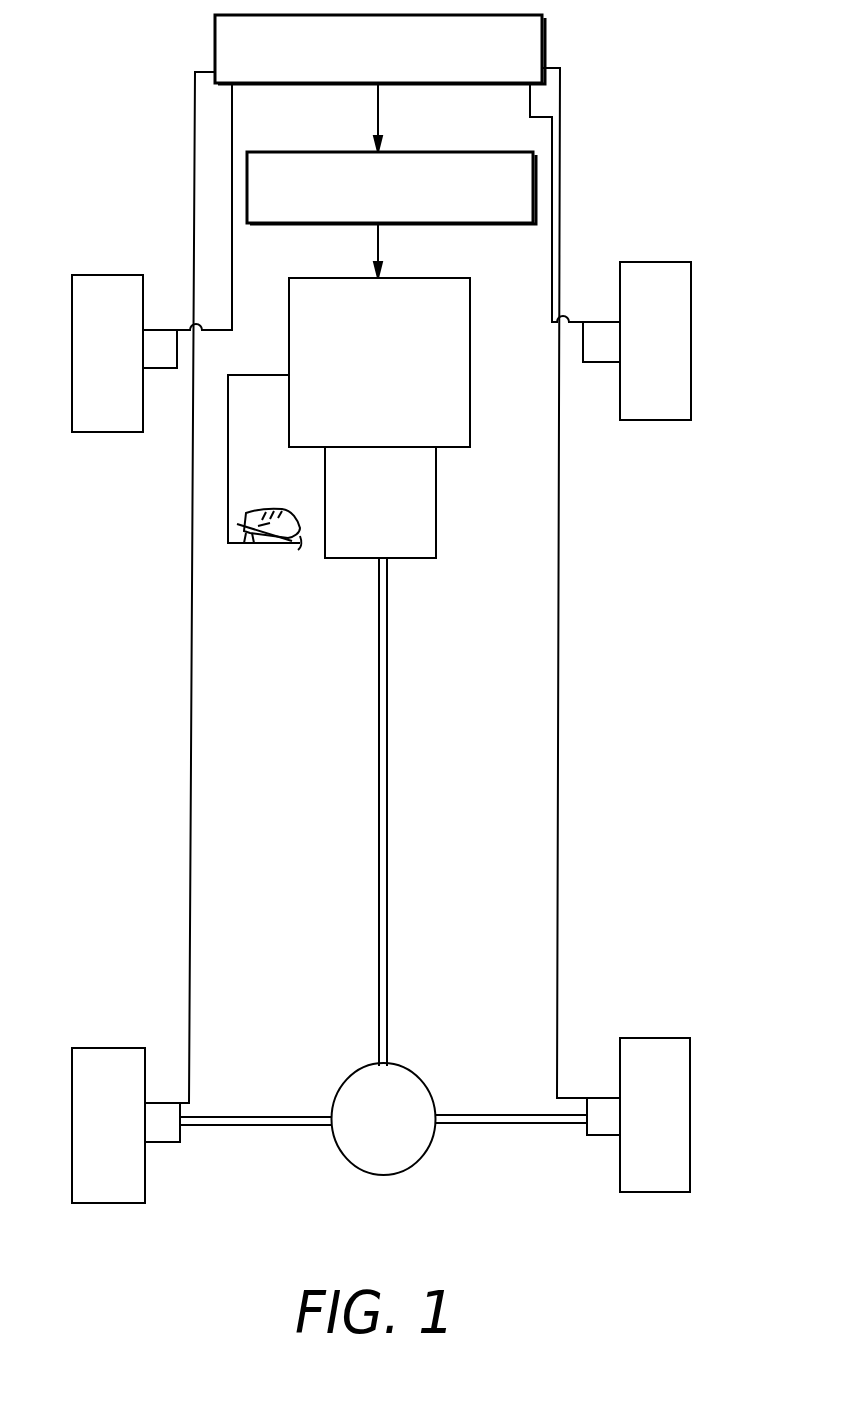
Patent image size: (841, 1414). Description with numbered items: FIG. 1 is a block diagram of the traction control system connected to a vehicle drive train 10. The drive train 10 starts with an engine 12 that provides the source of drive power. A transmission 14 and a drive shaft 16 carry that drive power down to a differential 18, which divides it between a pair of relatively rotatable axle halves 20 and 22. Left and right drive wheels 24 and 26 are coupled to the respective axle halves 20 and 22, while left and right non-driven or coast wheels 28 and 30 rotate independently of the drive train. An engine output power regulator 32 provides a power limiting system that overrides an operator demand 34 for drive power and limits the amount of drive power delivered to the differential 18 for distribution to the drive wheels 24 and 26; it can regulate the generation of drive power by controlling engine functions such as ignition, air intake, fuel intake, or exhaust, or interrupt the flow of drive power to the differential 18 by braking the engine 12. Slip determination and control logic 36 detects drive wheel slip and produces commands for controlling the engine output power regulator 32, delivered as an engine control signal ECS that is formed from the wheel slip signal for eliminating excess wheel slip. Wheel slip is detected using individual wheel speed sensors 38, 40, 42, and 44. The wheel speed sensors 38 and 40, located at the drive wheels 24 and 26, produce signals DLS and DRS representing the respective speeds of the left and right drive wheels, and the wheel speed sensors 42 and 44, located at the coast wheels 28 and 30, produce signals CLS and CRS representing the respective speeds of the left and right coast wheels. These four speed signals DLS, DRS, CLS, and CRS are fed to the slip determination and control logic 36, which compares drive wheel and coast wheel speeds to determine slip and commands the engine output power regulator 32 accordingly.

The vehicle drive train 10 is at (510, 657).
The engine 12 is at (470, 420).
The transmission 14 is at (436, 530).
The drive shaft 16 is at (387, 782).
The differential 18 is at (418, 1076).
The axle half 20 is at (277, 1116).
The axle half 22 is at (475, 1115).
The left drive wheel 24 is at (110, 1204).
The right drive wheel 26 is at (646, 1193).
The left coast wheel 28 is at (120, 433).
The right coast wheel 30 is at (660, 421).
The engine output power regulator 32 is at (495, 224).
The operator demand 34 is at (263, 544).
The slip determination and control logic 36 is at (215, 42).
The wheel speed sensor 38 is at (170, 1143).
The wheel speed sensor 40 is at (603, 1136).
The wheel speed sensor 42 is at (165, 369).
The wheel speed sensor 44 is at (600, 363).
The engine control signal ECS is at (378, 118).
The left coast wheel speed signal CLS is at (232, 290).
The right coast wheel speed signal CRS is at (552, 288).
The left drive wheel speed signal DLS is at (191, 788).
The right drive wheel speed signal DRS is at (558, 782).